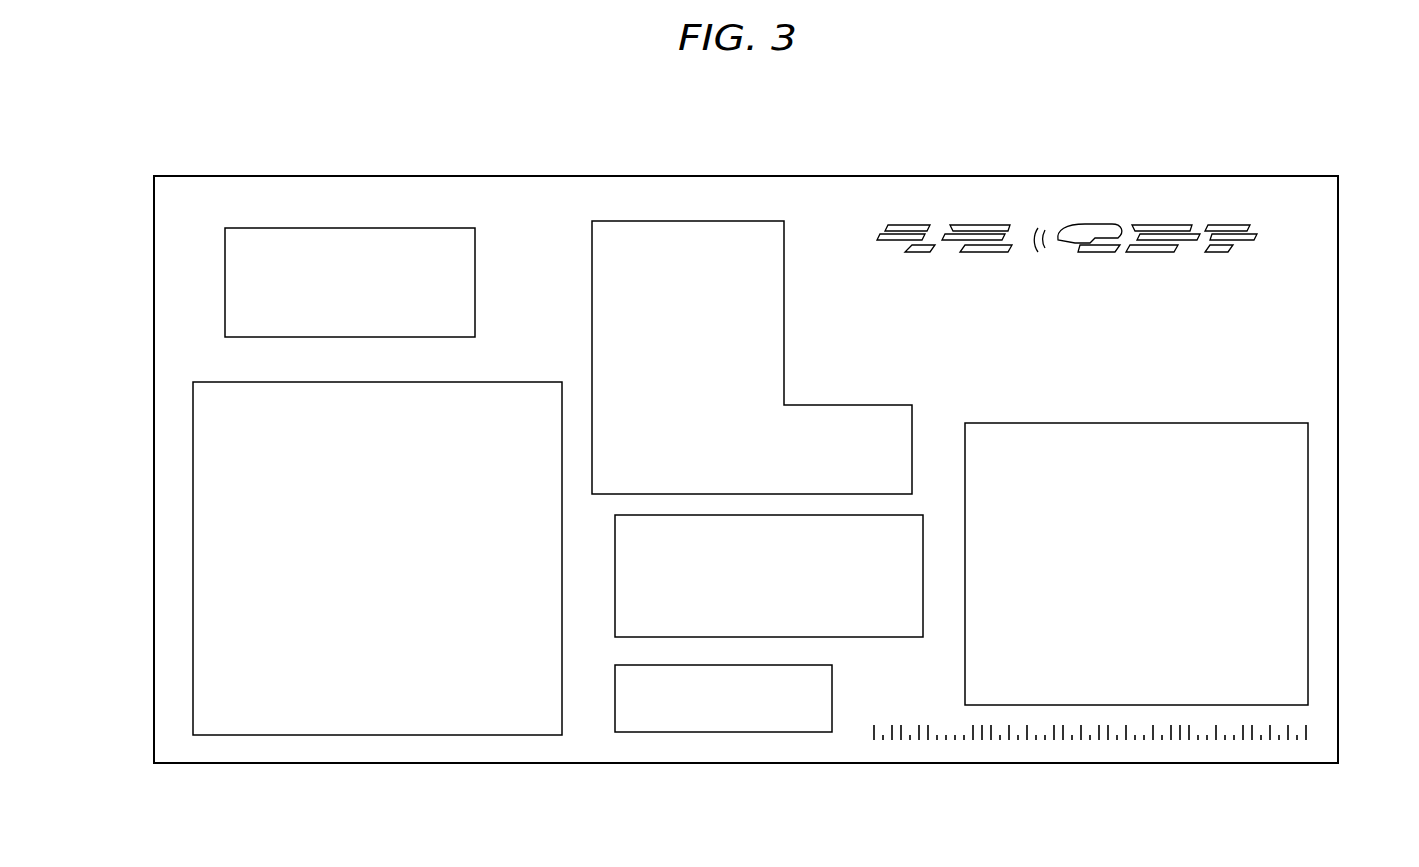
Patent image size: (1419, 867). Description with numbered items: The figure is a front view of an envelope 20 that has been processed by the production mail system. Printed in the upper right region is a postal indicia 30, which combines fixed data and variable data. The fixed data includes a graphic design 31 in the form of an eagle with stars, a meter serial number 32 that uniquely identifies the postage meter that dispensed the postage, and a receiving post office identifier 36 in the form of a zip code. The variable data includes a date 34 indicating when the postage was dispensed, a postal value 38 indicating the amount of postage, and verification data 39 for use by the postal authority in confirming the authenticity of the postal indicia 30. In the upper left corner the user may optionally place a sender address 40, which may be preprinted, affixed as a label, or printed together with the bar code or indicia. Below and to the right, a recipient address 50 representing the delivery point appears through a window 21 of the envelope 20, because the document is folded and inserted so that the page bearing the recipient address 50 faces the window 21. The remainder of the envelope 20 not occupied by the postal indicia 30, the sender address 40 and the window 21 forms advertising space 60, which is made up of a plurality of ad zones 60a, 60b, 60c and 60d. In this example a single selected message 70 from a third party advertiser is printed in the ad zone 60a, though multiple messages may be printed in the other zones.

The envelope 20 is at (547, 176).
The window 21 is at (627, 637).
The postal indicia 30 is at (1093, 264).
The graphic design 31 is at (1165, 228).
The meter serial number 32 is at (1267, 272).
The date 34 is at (1267, 302).
The receiving post office identifier 36 is at (1223, 343).
The postal value 38 is at (993, 303).
The verification data 39 is at (850, 276).
The sender address 40 is at (333, 228).
The recipient address 50 is at (640, 608).
The advertising space 60 is at (755, 118).
The ad zone 60a is at (193, 410).
The ad zone 60b is at (687, 221).
The ad zone 60c is at (810, 732).
The ad zone 60d is at (1308, 647).
The message 70 is at (297, 558).